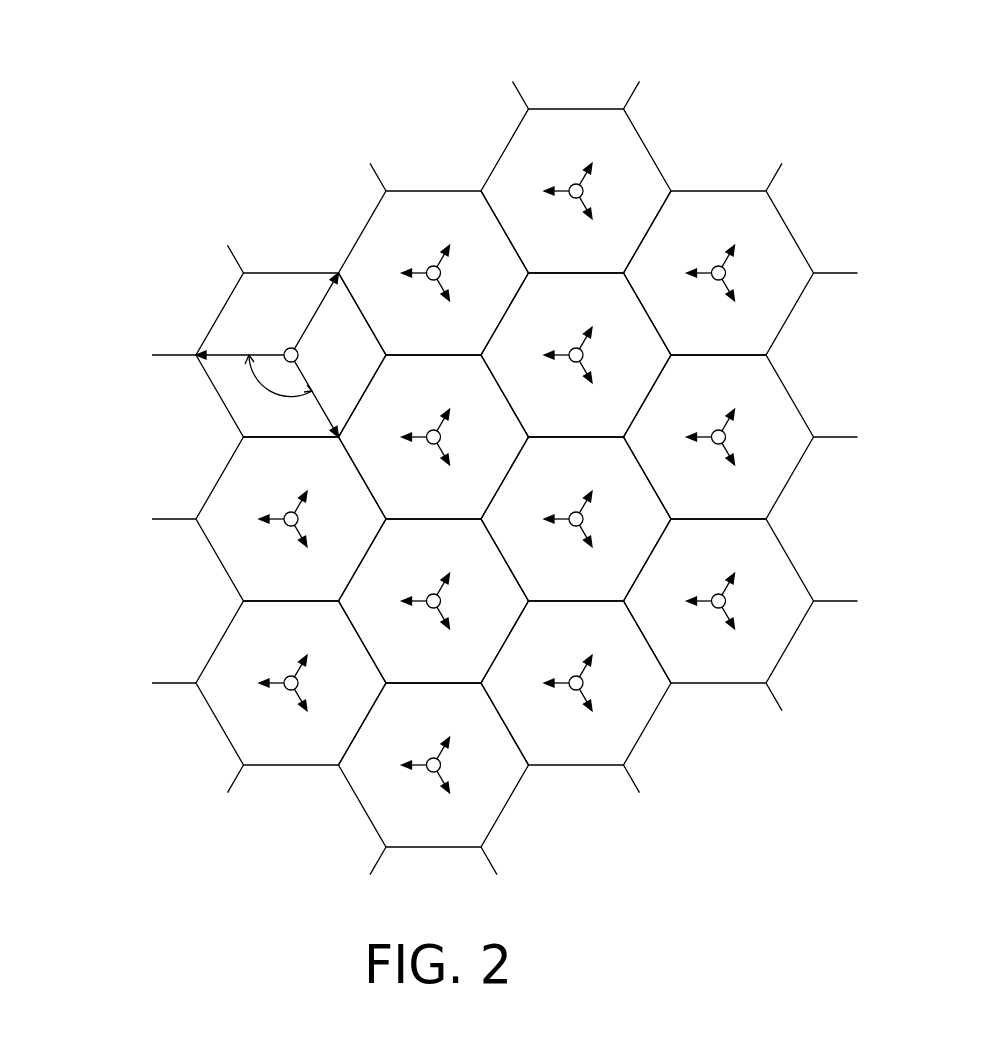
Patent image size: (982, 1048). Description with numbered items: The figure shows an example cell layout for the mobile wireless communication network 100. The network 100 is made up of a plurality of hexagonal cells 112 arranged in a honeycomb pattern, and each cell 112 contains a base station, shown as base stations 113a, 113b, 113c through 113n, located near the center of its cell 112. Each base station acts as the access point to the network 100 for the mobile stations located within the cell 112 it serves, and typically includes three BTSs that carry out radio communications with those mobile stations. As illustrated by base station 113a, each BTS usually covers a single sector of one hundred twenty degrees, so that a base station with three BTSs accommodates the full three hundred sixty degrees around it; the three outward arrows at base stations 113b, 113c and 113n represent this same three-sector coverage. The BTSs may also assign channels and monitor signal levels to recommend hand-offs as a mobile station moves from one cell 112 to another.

The mobile wireless communication network 100 is at (273, 138).
The cell 112 is at (278, 287).
The base station 113a is at (284, 352).
The base station 113b is at (287, 515).
The base station 113c is at (287, 680).
The base station 113n is at (724, 612).